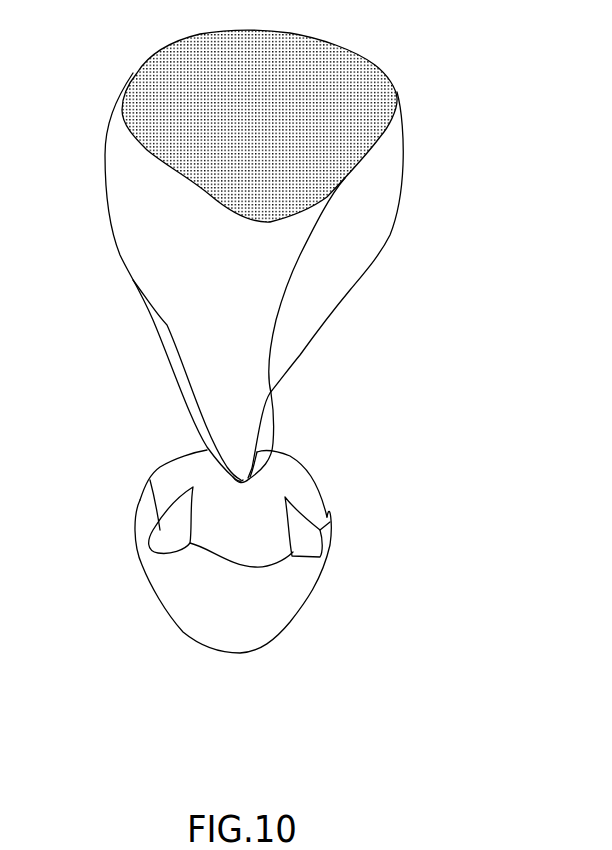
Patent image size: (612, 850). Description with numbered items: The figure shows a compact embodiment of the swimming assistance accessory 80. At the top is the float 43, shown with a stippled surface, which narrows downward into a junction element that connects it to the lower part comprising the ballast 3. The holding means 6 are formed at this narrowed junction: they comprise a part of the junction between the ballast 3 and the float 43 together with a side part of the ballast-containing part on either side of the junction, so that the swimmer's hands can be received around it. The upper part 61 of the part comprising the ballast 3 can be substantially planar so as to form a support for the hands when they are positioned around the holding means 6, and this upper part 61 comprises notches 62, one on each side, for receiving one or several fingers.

The swimming assistance accessory 80 is at (448, 72).
The float 43 is at (130, 73).
The holding means 6 is at (198, 439).
The upper part 61 is at (287, 477).
The notches 62 is at (147, 528).
The ballast 3 is at (168, 585).